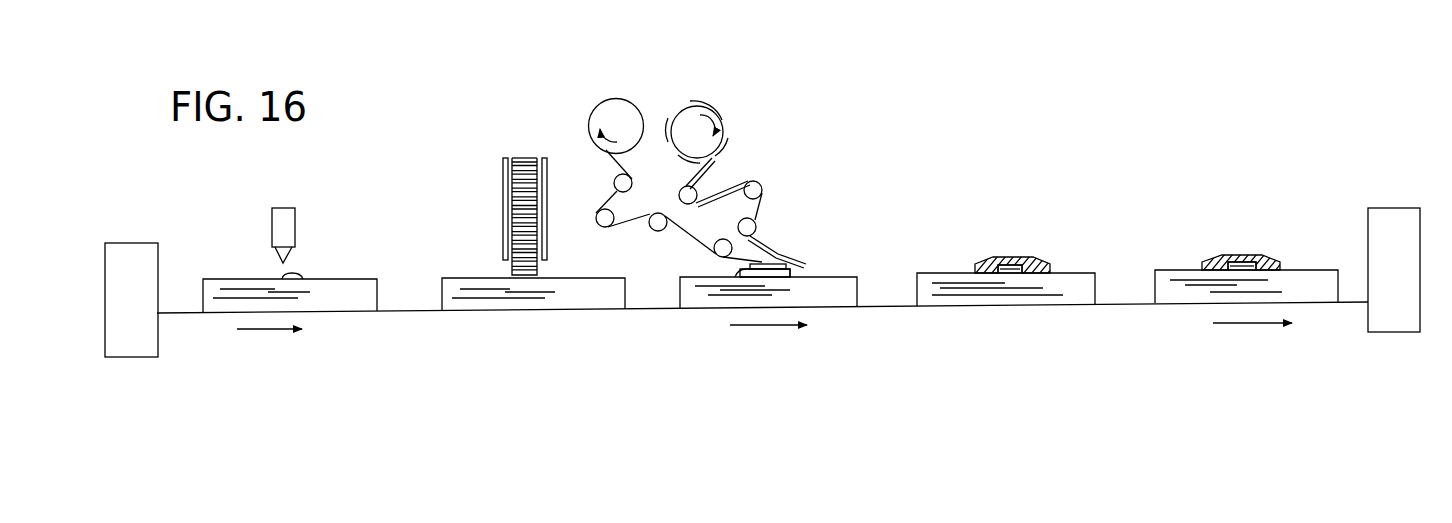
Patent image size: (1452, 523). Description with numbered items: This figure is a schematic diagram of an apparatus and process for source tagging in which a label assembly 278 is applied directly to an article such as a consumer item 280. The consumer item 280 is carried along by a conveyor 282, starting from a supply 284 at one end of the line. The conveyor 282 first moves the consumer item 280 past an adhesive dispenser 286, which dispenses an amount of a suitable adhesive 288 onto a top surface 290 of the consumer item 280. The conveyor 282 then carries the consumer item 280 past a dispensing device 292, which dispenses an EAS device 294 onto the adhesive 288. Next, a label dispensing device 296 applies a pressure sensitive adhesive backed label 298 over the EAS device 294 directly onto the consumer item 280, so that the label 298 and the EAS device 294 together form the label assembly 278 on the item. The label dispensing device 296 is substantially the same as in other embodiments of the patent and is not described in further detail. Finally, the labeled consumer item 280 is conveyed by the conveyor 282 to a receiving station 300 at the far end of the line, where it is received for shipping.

The label assembly 278 is at (1025, 256).
The consumer item 280 is at (362, 276).
The conveyor 282 is at (412, 313).
The supply 284 is at (137, 242).
The adhesive dispenser 286 is at (281, 208).
The adhesive 288 is at (302, 273).
The top surface 290 is at (232, 279).
The dispensing device 292 is at (490, 175).
The EAS device 294 is at (546, 276).
The label dispensing device 296 is at (744, 147).
The pressure sensitive adhesive backed label 298 is at (752, 180).
The receiving station 300 is at (1392, 208).